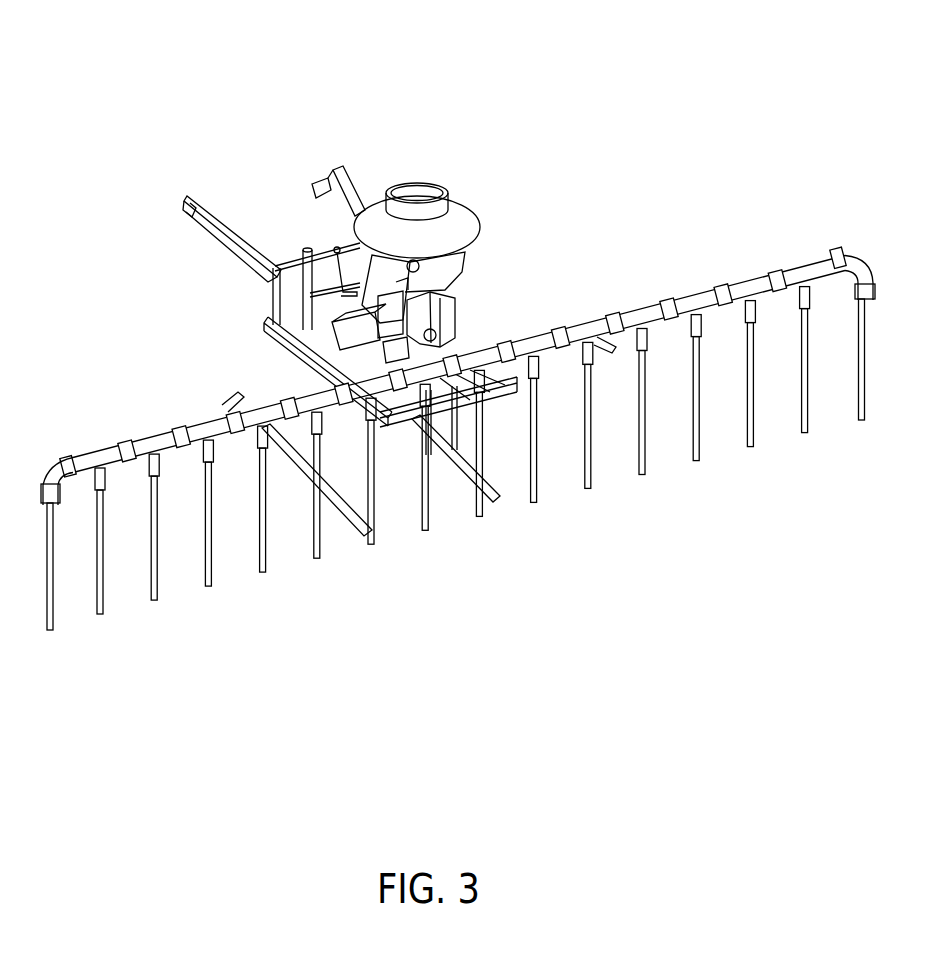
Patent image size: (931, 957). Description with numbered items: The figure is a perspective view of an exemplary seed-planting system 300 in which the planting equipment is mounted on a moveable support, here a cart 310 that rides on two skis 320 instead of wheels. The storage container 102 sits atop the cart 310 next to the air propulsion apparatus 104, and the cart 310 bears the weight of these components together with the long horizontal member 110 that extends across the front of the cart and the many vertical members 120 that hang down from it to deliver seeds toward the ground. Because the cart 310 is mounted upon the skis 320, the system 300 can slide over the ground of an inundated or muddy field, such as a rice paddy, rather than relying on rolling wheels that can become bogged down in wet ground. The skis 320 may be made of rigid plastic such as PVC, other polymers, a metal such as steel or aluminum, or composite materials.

The system 300 is at (397, 74).
The cart 310 is at (204, 211).
The storage container 102 is at (476, 211).
The air propulsion apparatus 104 is at (458, 313).
The horizontal member 110 is at (102, 445).
The vertical members 120 is at (55, 607).
The skis 320 is at (357, 535).